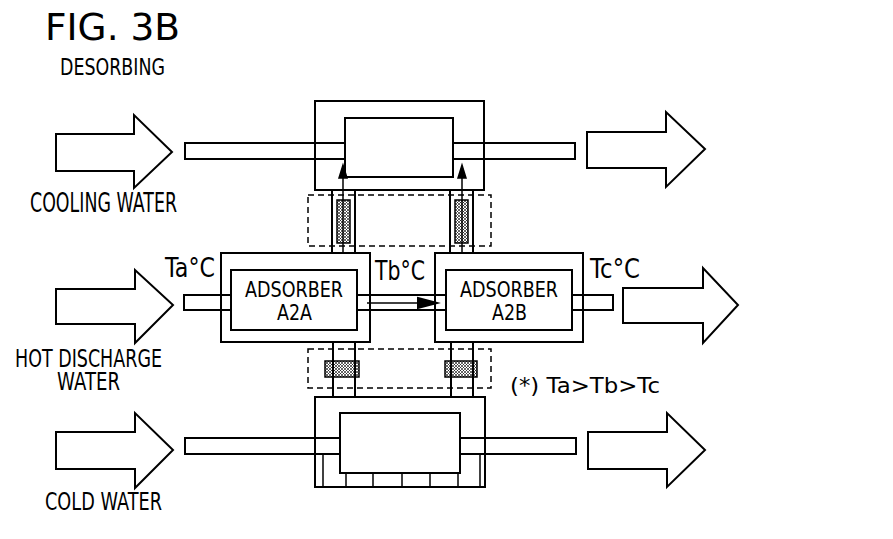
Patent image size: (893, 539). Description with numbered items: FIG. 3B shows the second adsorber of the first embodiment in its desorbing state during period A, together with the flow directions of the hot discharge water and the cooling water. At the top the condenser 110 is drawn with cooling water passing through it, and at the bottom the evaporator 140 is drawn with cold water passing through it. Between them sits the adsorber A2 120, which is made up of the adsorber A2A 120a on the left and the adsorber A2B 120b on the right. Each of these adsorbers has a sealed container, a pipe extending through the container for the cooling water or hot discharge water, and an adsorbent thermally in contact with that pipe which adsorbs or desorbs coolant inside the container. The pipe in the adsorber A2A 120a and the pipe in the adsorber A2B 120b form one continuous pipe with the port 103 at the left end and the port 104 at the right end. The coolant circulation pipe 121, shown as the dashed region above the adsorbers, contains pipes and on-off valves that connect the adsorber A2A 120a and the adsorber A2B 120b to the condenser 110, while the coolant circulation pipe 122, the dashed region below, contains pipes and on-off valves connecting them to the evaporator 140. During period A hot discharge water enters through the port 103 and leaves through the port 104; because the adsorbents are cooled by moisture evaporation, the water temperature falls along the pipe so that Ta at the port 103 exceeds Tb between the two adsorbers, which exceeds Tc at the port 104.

The condenser 110 is at (458, 112).
The adsorber A2 120 is at (605, 210).
The adsorber A2A 120a is at (360, 258).
The adsorber A2B 120b is at (532, 260).
The coolant circulation pipe 121 is at (307, 217).
The coolant circulation pipe 122 is at (308, 375).
The port 103 is at (205, 305).
The port 104 is at (597, 308).
The evaporator 140 is at (325, 420).